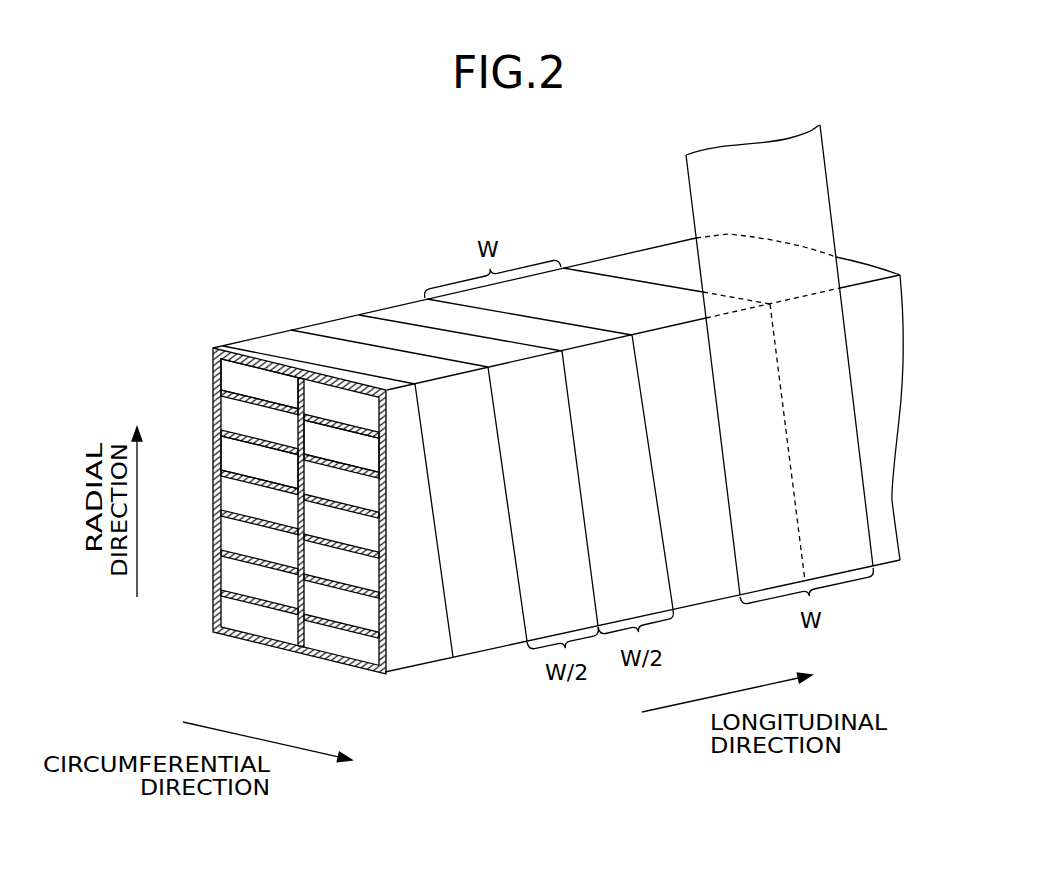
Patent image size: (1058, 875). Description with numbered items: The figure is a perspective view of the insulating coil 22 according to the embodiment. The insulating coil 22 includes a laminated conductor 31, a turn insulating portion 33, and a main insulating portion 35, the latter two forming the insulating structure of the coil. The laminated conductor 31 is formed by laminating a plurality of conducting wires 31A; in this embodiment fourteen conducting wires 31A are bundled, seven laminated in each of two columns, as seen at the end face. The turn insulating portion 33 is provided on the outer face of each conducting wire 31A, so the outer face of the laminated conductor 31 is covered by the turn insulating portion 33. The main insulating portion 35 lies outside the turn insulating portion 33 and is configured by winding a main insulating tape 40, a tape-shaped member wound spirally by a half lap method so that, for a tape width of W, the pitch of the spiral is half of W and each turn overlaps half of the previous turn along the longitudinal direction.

The insulating coil 22 is at (418, 188).
The laminated conductor 31 is at (229, 452).
The conducting wire 31A is at (343, 436).
The turn insulating portion 33 is at (337, 622).
The main insulating portion 35 is at (390, 647).
The main insulating tape 40 is at (808, 195).